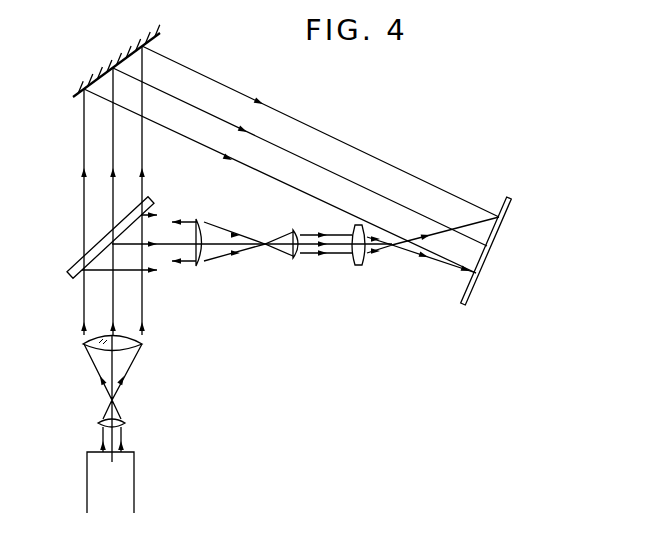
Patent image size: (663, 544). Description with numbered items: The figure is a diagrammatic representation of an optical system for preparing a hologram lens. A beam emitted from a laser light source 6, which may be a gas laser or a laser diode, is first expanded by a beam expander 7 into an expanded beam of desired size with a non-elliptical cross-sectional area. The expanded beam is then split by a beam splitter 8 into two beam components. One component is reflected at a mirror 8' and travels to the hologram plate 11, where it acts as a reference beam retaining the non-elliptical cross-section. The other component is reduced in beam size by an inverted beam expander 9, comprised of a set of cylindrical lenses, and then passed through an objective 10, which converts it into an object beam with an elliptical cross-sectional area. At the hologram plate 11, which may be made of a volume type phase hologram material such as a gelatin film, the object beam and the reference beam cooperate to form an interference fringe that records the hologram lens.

The laser light source 6 is at (134, 480).
The beam expander 7 is at (141, 353).
The beam splitter 8 is at (97, 238).
The mirror 8' is at (141, 59).
The inverted beam expander 9 is at (299, 275).
The objective 10 is at (358, 265).
The hologram plate 11 is at (513, 204).